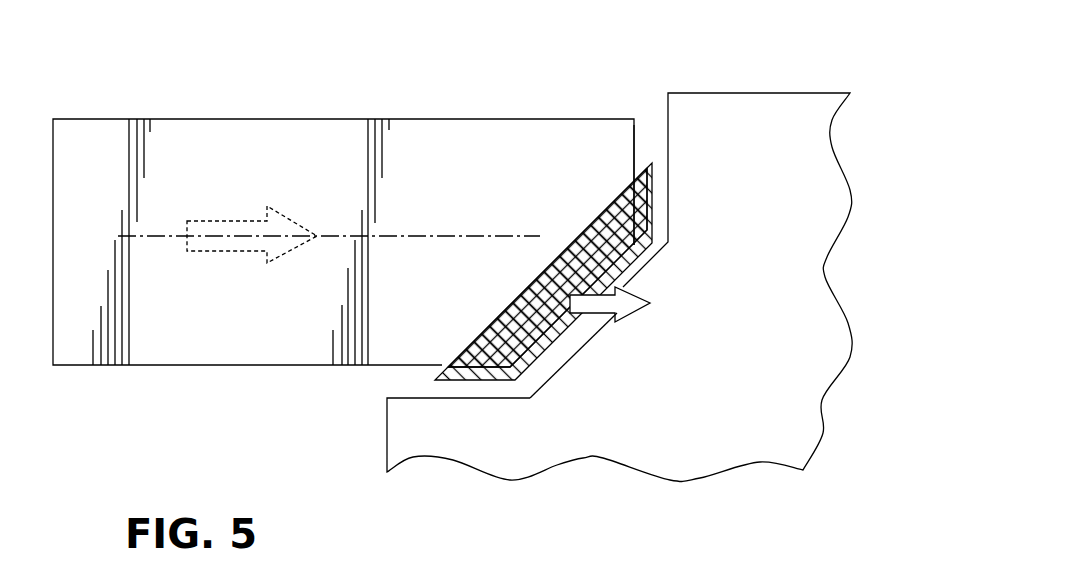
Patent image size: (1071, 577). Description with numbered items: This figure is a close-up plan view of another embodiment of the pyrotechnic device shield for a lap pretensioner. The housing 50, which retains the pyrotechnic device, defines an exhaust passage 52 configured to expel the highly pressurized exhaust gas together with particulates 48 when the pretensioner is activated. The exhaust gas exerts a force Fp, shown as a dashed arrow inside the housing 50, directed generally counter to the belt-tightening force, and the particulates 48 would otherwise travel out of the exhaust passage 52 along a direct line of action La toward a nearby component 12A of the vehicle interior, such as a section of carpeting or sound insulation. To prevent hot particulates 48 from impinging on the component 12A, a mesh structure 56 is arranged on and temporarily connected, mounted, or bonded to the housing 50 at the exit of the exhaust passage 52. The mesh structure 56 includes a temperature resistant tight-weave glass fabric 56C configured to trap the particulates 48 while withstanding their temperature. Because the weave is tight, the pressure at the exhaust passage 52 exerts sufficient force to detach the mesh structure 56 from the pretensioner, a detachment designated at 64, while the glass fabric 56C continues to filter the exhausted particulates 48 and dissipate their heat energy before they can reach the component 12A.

The component 12A is at (648, 295).
The particulates 48 is at (224, 304).
The housing 50 is at (213, 152).
The exhaust passage 52 is at (635, 132).
The mesh structure 56 is at (543, 241).
The tight-weave glass fabric 56C is at (652, 190).
The detachment 64 is at (600, 317).
The force Fp is at (237, 253).
The direct line of action La is at (477, 237).